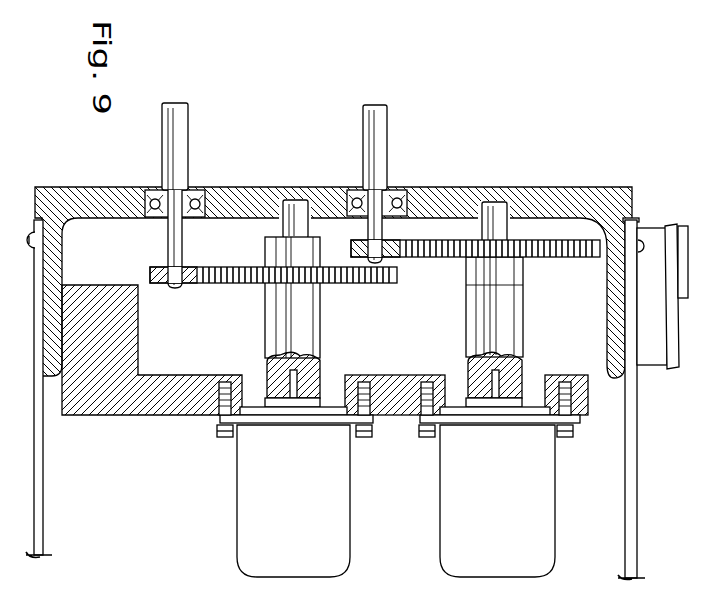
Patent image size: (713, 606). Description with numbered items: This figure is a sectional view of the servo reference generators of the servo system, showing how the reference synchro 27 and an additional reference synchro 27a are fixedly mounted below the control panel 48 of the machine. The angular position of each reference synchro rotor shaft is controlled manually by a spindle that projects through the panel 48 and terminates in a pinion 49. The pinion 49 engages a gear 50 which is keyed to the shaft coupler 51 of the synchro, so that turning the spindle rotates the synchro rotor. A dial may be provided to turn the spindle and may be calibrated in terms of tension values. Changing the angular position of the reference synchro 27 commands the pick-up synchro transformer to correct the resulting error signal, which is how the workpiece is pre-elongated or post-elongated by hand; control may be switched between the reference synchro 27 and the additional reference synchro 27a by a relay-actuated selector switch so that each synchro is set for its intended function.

The control panel 48 is at (224, 195).
The pinion 49 is at (168, 282).
The gear 50 is at (213, 283).
The shaft coupler 51 is at (272, 350).
The reference synchro 27a is at (250, 527).
The reference synchro 27 is at (450, 518).